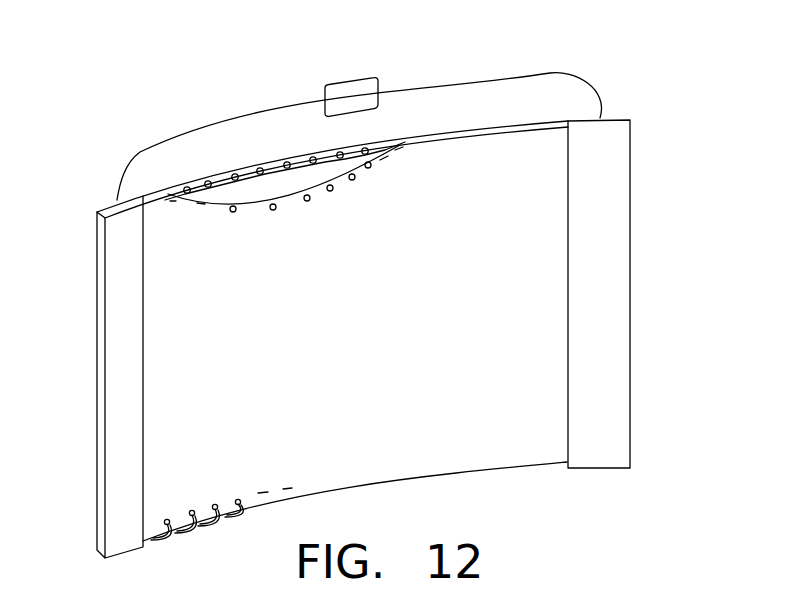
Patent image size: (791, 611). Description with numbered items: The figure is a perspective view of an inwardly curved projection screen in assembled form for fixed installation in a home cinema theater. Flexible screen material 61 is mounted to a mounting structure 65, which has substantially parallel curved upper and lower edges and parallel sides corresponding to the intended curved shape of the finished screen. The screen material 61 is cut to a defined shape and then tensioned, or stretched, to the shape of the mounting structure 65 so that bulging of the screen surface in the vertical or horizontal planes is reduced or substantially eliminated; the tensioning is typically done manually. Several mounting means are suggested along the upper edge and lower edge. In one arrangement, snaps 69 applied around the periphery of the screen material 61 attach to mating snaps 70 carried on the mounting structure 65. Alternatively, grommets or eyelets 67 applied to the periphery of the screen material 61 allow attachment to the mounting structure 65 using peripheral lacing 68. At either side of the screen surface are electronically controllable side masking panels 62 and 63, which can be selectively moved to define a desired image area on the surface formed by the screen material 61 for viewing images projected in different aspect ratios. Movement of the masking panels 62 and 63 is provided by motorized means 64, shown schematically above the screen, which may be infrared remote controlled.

The screen material 61 is at (512, 440).
The side masking panel 62 is at (122, 540).
The side masking panel 63 is at (608, 438).
The motorized means 64 is at (352, 77).
The mounting structure 65 is at (160, 190).
The grommets or eyelets 67 is at (217, 504).
The peripheral lacing 68 is at (208, 524).
The snaps 69 is at (272, 211).
The mating snaps 70 is at (259, 167).